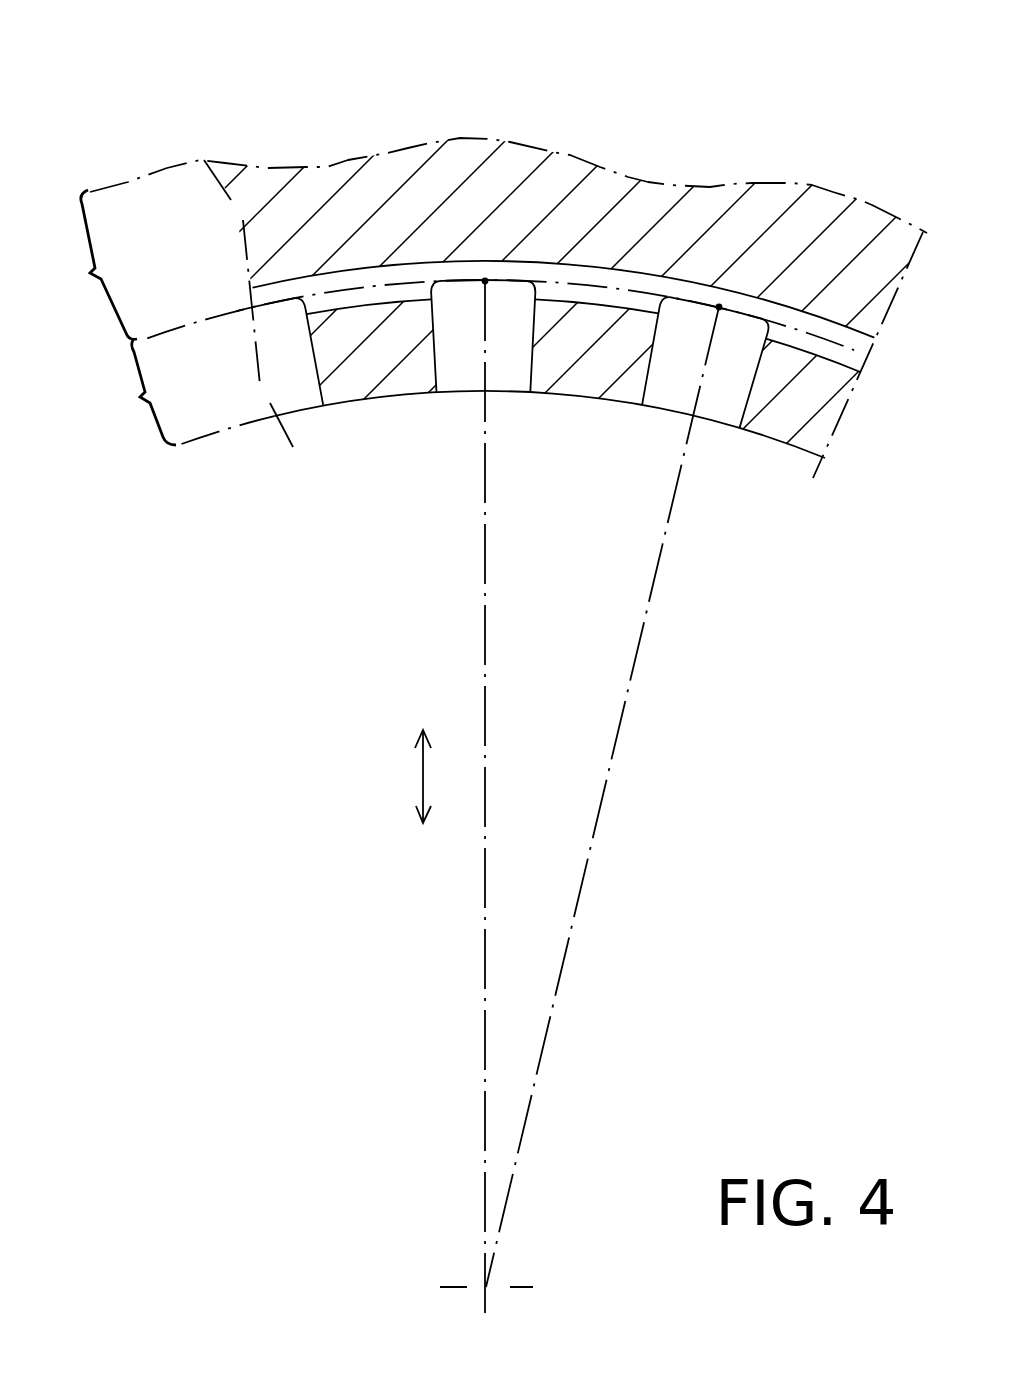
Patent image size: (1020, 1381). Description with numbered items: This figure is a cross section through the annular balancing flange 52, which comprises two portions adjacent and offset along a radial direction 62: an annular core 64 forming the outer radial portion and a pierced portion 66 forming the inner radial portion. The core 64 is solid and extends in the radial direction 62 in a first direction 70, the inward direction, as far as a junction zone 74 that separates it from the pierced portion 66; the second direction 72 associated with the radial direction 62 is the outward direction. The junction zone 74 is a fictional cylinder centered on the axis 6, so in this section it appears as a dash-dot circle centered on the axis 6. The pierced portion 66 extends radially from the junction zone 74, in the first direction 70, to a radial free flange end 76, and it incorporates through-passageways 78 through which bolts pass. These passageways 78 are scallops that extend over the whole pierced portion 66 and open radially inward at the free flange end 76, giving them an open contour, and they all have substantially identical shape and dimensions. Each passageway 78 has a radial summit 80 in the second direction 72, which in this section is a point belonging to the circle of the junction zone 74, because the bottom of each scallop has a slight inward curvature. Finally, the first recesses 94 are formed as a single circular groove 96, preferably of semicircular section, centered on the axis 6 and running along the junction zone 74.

The axis 6 is at (486, 1289).
The annular balancing flange 52 is at (510, 105).
The radial direction 62 is at (422, 780).
The annular core 64 is at (97, 264).
The pierced portion 66 is at (510, 300).
The first direction 70 is at (422, 824).
The second direction 72 is at (420, 739).
The junction zone 74 is at (170, 327).
The radial free flange end 76 is at (382, 397).
The through-passageway 78 is at (474, 353).
The radial summit 80 is at (485, 280).
The first recesses 94 is at (527, 271).
The circular groove 96 is at (825, 331).